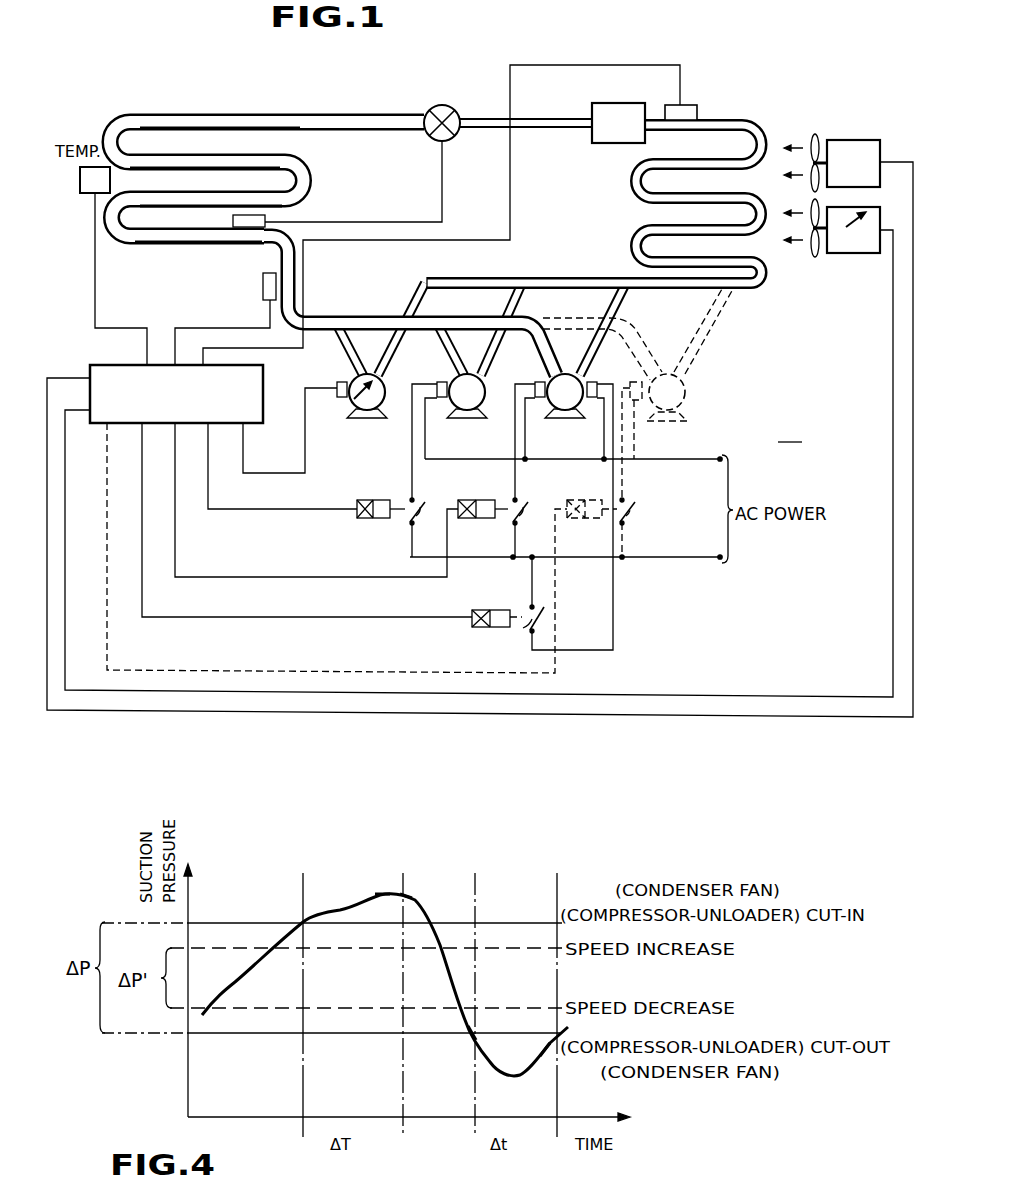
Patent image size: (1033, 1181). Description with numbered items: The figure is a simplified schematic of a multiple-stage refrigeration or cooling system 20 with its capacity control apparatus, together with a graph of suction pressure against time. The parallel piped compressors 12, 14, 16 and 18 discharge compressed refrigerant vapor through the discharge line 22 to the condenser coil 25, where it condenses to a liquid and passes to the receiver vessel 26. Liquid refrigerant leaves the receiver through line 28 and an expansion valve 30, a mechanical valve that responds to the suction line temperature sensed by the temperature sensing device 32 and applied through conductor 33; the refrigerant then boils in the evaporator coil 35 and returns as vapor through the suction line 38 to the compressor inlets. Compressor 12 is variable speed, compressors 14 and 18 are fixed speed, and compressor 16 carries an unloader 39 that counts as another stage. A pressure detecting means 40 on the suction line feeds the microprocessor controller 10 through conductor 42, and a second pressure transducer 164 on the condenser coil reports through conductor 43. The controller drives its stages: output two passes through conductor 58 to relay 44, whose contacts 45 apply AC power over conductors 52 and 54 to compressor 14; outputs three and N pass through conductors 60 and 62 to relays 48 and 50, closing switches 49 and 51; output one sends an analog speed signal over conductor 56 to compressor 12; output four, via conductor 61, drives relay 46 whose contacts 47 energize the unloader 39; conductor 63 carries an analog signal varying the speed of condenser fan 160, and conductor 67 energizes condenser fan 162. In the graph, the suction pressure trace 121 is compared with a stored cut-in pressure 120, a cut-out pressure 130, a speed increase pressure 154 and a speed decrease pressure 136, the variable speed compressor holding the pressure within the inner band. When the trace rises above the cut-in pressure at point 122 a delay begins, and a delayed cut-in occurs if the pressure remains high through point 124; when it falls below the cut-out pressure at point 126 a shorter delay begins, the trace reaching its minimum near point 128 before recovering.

In FIG. 1, the microprocessor controller 10 is at (112, 365).
In FIG. 1, the variable speed compressor 12 is at (384, 380).
In FIG. 1, the second compressor 14 is at (486, 380).
In FIG. 1, the compressor with unloader 16 is at (586, 380).
In FIG. 1, the Nth compressor 18 is at (688, 390).
In FIG. 1, the multiple-stage refrigeration or cooling system 20 is at (790, 431).
In FIG. 1, the discharge line 22 is at (507, 278).
In FIG. 1, the condenser coil 25 is at (742, 196).
In FIG. 1, the receiver vessel 26 is at (605, 143).
In FIG. 1, the line 28 is at (488, 130).
In FIG. 1, the expansion valve 30 is at (436, 106).
In FIG. 1, the temperature sensing device 32 is at (266, 218).
In FIG. 1, the conductor 33 is at (440, 166).
In FIG. 1, the evaporator coil 35 is at (128, 114).
In FIG. 1, the suction line 38 is at (297, 289).
In FIG. 1, the unloader 39 is at (596, 410).
In FIG. 1, the pressure detecting means 40 is at (263, 295).
In FIG. 1, the conductor 42 is at (173, 328).
In FIG. 1, the conductor 43 is at (580, 65).
In FIG. 1, the relay 44 is at (374, 500).
In FIG. 1, the relay switch contacts 45 is at (425, 527).
In FIG. 1, the relay 46 is at (478, 610).
In FIG. 1, the relay switch contacts 47 is at (522, 628).
In FIG. 1, the relay 48 is at (473, 500).
In FIG. 1, the switch 49 is at (529, 527).
In FIG. 1, the relay 50 is at (583, 500).
In FIG. 1, the switch 51 is at (639, 527).
In FIG. 1, the conductor 52 is at (693, 463).
In FIG. 1, the conductor 54 is at (685, 556).
In FIG. 1, the conductor 56 is at (289, 473).
In FIG. 1, the conductor 58 is at (306, 509).
In FIG. 1, the conductor 60 is at (215, 577).
In FIG. 1, the conductor 61 is at (455, 617).
In FIG. 1, the conductor 62 is at (200, 671).
In FIG. 1, the conductor 63 is at (752, 696).
In FIG. 1, the conductor 67 is at (775, 717).
In FIG. 1, the condenser fan 160 is at (857, 254).
In FIG. 1, the condenser fan 162 is at (865, 140).
In FIG. 1, the second pressure transducer 164 is at (694, 104).
In FIG. 4, the cut-in pressure 120 is at (248, 922).
In FIG. 4, the pressure trace 121 is at (236, 983).
In FIG. 4, the point 122 is at (382, 892).
In FIG. 4, the point 124 is at (406, 894).
In FIG. 4, the point 126 is at (472, 1041).
In FIG. 4, the pressure minimum 128 is at (546, 1052).
In FIG. 4, the cut-out pressure 130 is at (263, 1034).
In FIG. 4, the speed decrease suction pressure 136 is at (366, 1009).
In FIG. 4, the speed increase level 154 is at (457, 947).